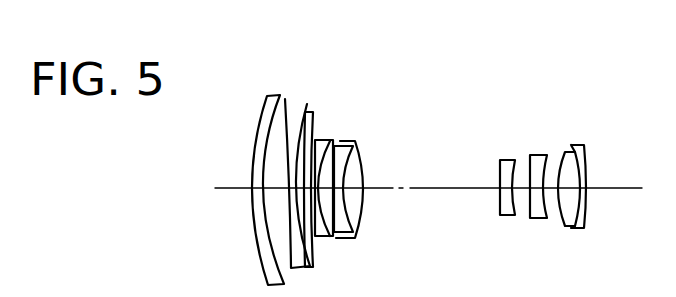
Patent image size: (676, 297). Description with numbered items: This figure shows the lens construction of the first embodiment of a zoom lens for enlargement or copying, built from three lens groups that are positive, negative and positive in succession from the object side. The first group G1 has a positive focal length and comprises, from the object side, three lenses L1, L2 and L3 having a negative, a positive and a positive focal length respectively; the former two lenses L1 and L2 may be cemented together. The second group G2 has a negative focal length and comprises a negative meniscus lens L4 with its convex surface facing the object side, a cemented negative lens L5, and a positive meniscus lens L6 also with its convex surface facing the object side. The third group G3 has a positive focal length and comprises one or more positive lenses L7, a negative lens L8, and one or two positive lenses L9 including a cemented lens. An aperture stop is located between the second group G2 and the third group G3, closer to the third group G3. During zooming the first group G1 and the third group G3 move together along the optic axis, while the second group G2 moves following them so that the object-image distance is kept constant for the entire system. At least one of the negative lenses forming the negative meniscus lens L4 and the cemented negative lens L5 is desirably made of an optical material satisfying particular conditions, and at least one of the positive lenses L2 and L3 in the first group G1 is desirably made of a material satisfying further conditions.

The first group G1 is at (345, 32).
The second group G2 is at (430, 76).
The third group G3 is at (605, 74).
The lens L1 is at (272, 93).
The lens L2 is at (284, 98).
The lens L3 is at (309, 111).
The negative meniscus lens L4 is at (322, 139).
The cemented negative lens L5 is at (346, 144).
The positive meniscus lens L6 is at (362, 144).
The positive lens L7 is at (505, 159).
The negative lens L8 is at (537, 154).
The positive lens L9 is at (572, 143).